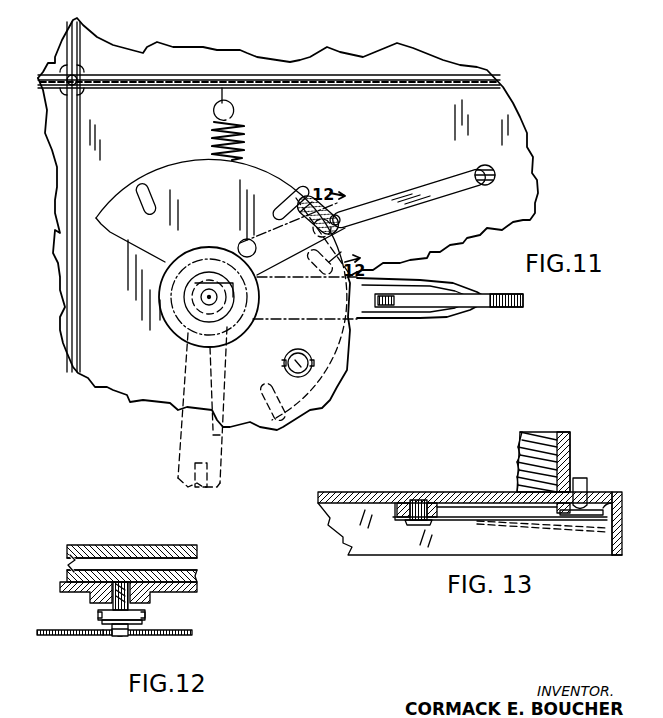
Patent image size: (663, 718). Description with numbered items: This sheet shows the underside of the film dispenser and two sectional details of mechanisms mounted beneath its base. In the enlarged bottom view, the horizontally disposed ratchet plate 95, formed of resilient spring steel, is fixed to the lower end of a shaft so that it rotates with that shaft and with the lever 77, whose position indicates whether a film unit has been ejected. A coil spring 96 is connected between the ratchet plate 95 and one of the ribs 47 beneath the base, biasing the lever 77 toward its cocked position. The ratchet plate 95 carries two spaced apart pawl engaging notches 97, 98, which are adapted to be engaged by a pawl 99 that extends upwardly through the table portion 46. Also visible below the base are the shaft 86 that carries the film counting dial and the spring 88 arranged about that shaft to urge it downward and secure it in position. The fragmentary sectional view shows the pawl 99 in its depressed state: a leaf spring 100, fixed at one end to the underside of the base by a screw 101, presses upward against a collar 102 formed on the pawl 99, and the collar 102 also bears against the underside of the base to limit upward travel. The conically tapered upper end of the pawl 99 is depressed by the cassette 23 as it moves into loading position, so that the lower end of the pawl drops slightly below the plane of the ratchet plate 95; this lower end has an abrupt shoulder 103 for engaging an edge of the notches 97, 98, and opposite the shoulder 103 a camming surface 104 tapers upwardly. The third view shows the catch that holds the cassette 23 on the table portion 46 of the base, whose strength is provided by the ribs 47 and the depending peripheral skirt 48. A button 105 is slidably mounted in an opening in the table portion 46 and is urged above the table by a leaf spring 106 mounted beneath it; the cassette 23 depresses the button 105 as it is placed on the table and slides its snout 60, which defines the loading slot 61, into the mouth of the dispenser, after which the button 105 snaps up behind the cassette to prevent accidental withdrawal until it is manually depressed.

In FIG. 11, the ribs 47 is at (132, 83).
In FIG. 11, the ratchet plate 95 is at (165, 180).
In FIG. 12, the ratchet plate 95 is at (55, 637).
In FIG. 11, the coil spring 96 is at (238, 128).
In FIG. 11, the pawl engaging notch 97 is at (310, 182).
In FIG. 12, the pawl engaging notch 97 is at (103, 635).
In FIG. 11, the pawl engaging notch 98 is at (130, 190).
In FIG. 11, the leaf spring 100 is at (427, 193).
In FIG. 12, the leaf spring 100 is at (102, 621).
In FIG. 11, the screw 101 is at (483, 183).
In FIG. 11, the camming surface 104 is at (333, 217).
In FIG. 12, the camming surface 104 is at (118, 637).
In FIG. 11, the lever 77 is at (463, 290).
In FIG. 11, the shaft 86 is at (292, 363).
In FIG. 11, the spring 88 is at (303, 352).
In FIG. 12, the snout 60 is at (85, 545).
In FIG. 12, the slot 61 is at (78, 565).
In FIG. 12, the pawl 99 is at (128, 607).
In FIG. 12, the collar 102 is at (100, 613).
In FIG. 12, the shoulder 103 is at (123, 635).
In FIG. 13, the cassette 23 is at (572, 442).
In FIG. 13, the table portion 46 is at (370, 493).
In FIG. 13, the peripheral skirt 48 is at (617, 535).
In FIG. 13, the button 105 is at (585, 478).
In FIG. 13, the leaf spring 106 is at (467, 522).